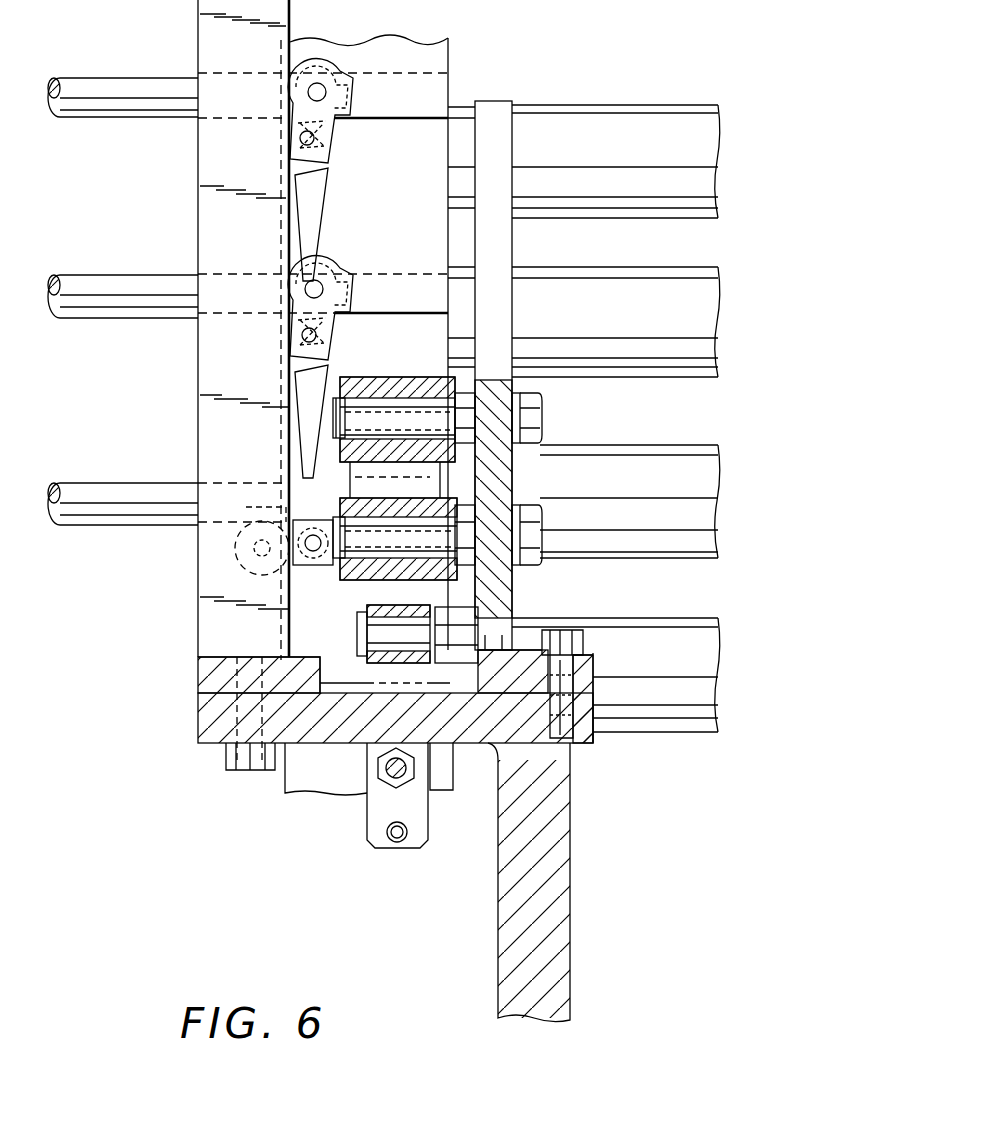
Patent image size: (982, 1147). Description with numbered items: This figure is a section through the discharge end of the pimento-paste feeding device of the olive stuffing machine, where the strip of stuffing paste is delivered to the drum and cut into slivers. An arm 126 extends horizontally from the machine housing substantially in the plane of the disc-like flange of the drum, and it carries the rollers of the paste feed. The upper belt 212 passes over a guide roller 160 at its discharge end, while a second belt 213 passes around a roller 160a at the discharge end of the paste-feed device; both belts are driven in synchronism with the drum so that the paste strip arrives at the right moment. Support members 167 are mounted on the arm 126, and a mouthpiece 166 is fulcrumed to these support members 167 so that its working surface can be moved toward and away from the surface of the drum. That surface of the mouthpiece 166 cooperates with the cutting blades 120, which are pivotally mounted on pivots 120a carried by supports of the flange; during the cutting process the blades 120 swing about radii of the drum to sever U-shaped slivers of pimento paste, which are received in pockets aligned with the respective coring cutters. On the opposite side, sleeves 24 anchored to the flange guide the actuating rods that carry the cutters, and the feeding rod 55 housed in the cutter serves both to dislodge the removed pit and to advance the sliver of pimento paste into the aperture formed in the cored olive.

The sleeves 24 is at (641, 379).
The feeding rod 55 is at (125, 512).
The cutting blades 120 is at (300, 206).
The pivot 120a is at (318, 138).
The arm 126 is at (556, 855).
The guide roller 160 is at (383, 378).
The roller 160a is at (358, 568).
The mouthpiece 166 is at (378, 815).
The support members 167 is at (213, 352).
The upper belt 212 is at (397, 379).
The belt 213 is at (421, 493).